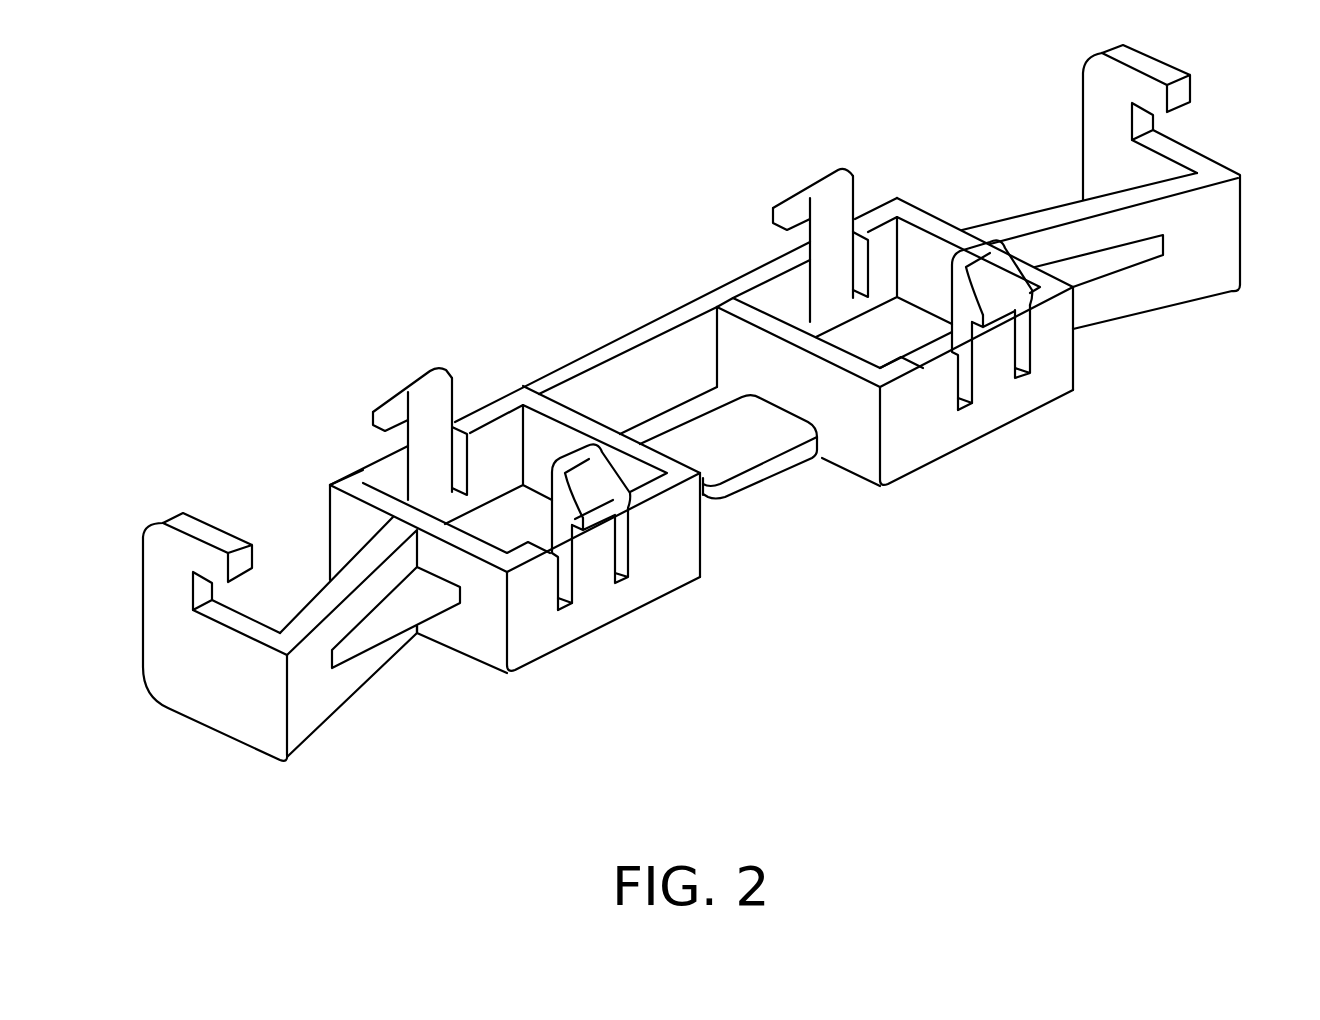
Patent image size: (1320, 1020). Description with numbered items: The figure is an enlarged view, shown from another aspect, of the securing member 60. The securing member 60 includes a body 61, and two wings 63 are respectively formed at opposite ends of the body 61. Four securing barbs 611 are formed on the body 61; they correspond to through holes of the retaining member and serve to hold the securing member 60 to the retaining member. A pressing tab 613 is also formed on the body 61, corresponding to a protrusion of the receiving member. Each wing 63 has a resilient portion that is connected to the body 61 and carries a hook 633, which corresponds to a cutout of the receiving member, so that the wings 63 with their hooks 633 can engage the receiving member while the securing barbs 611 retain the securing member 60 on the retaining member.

The securing member 60 is at (578, 302).
The body 61 is at (921, 447).
The securing barbs 611 is at (843, 198).
The pressing tab 613 is at (735, 445).
The wings 63 is at (1197, 277).
The hook 633 is at (1137, 85).